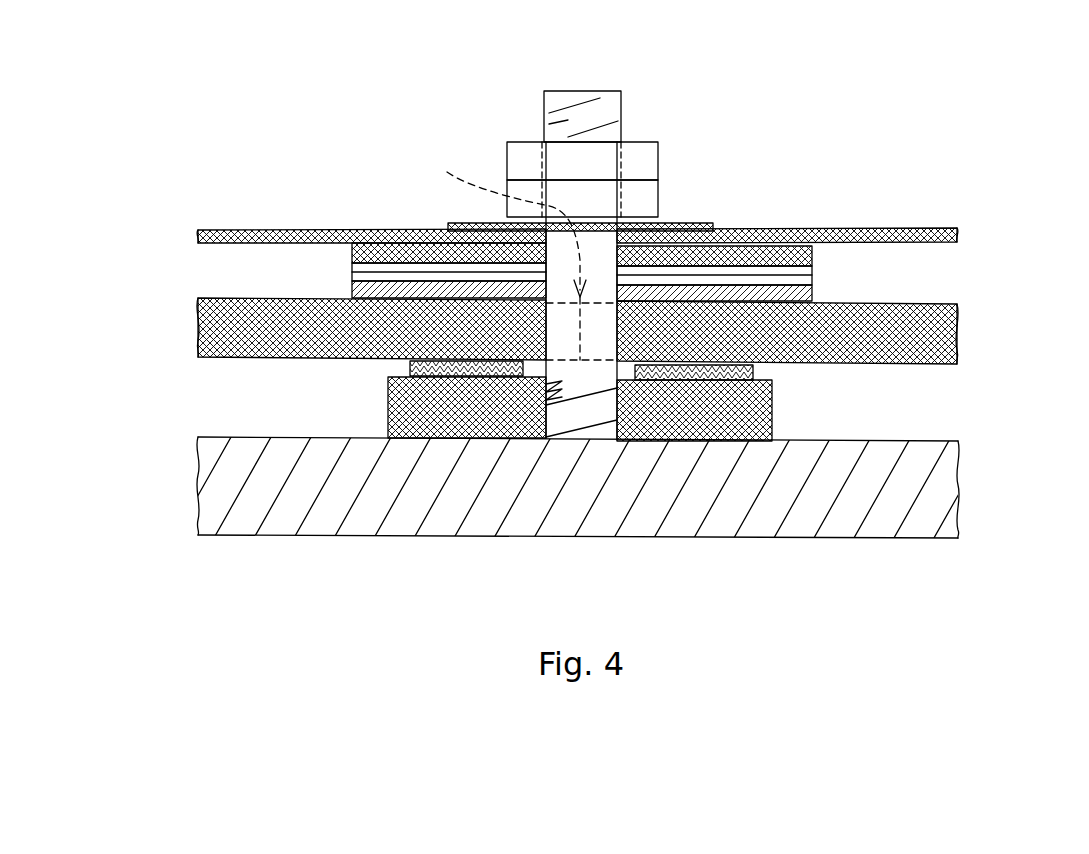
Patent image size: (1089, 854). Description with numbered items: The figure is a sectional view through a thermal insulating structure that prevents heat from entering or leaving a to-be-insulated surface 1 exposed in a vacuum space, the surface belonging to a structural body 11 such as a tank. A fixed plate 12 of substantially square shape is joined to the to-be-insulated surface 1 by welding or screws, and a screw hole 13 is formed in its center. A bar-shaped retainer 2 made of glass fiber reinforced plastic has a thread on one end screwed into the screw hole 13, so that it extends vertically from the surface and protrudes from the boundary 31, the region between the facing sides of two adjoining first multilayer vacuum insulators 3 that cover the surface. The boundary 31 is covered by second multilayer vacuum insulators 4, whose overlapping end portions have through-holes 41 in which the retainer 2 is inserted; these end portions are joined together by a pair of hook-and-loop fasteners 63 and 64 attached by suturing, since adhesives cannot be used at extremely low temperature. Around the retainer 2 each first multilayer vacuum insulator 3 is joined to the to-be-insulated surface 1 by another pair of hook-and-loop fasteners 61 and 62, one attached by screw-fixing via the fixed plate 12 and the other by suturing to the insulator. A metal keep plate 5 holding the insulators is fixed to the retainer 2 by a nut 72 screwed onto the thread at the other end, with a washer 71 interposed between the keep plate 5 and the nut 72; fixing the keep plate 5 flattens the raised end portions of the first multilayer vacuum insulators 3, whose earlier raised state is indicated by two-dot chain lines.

The to-be-insulated surface 1 is at (905, 440).
The structural body 11 is at (940, 497).
The fixed plate 12 is at (452, 405).
The screw hole 13 is at (562, 420).
The retainer 2 is at (563, 91).
The first multilayer vacuum insulator 3 is at (198, 330).
The boundary 31 is at (523, 253).
The second multilayer vacuum insulator 4 is at (812, 298).
The through-hole 41 is at (617, 256).
The keep plate 5 is at (243, 230).
The hook-and-loop fastener 61 is at (388, 380).
The hook-and-loop fastener 62 is at (410, 366).
The hook-and-loop fastener 63 is at (352, 277).
The hook-and-loop fastener 64 is at (352, 262).
The washer 71 is at (643, 198).
The nut 72 is at (658, 222).